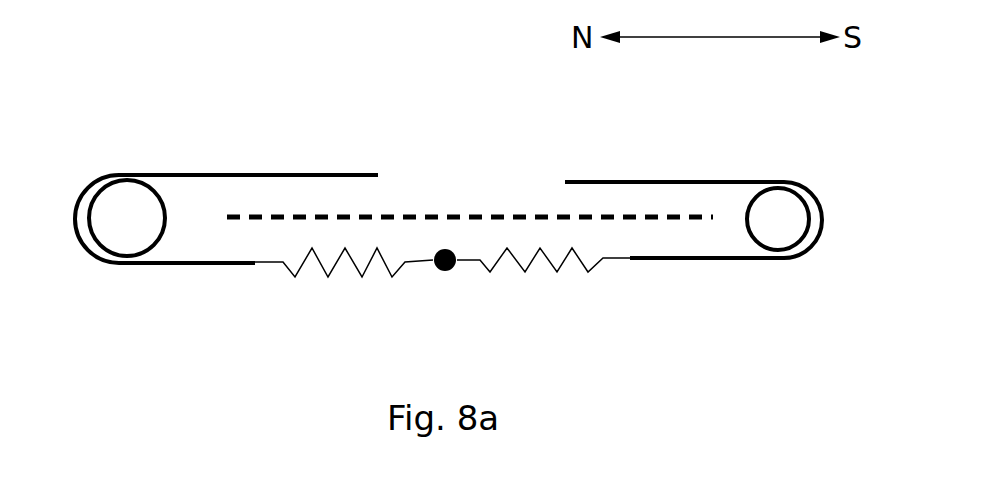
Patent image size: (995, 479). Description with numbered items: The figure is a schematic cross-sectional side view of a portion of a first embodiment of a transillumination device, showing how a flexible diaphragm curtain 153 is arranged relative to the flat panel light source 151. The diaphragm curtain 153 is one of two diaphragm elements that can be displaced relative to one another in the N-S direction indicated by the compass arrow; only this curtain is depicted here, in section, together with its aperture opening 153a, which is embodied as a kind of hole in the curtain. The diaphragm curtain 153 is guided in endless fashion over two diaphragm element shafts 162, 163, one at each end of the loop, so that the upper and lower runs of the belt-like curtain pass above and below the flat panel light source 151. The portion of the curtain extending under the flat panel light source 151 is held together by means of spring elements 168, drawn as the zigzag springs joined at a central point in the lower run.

The diaphragm curtain 153 is at (448, 179).
The aperture opening 153a is at (424, 161).
The flat panel light source 151 is at (452, 213).
The diaphragm element shaft 162 is at (114, 230).
The diaphragm element shaft 163 is at (786, 236).
The spring element 168 is at (479, 278).